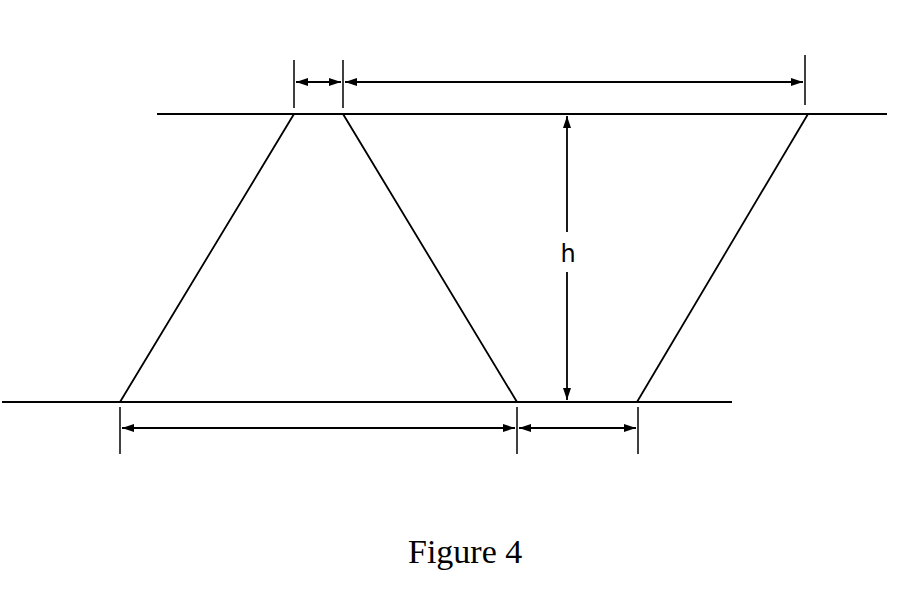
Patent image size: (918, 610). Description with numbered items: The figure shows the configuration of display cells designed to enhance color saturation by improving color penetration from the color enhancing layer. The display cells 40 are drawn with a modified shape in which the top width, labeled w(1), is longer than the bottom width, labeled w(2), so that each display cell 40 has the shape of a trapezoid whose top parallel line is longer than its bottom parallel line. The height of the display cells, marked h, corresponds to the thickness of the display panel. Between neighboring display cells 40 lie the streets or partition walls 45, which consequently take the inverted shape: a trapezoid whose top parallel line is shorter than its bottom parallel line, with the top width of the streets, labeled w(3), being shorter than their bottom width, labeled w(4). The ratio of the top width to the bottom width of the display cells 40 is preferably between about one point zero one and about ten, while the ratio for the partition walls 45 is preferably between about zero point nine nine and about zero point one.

The streets or partition walls 45 is at (255, 272).
The display cells 40 is at (653, 226).
The width w(1) dimension 1 is at (575, 74).
The width w(2) dimension 2 is at (578, 442).
The width w(3) dimension 3 is at (315, 69).
The width w(4) dimension 4 is at (318, 444).